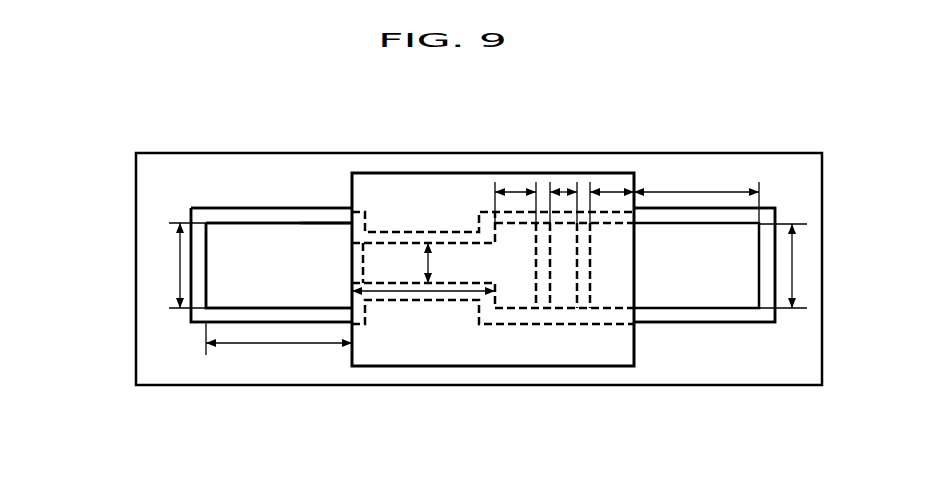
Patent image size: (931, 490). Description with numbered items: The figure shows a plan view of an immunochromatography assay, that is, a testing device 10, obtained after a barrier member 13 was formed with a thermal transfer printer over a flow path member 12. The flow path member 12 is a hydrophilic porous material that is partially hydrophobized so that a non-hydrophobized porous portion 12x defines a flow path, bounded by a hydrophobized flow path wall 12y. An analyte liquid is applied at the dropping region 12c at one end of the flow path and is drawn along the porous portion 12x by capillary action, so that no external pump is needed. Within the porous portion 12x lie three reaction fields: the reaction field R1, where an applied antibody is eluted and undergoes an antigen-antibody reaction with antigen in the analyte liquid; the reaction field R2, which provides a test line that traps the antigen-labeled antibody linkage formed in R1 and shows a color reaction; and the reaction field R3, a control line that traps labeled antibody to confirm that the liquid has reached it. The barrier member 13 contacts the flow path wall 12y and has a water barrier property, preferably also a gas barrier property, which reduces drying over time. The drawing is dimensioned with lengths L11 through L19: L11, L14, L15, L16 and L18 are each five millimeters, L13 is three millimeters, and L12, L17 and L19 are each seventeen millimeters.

The testing device 10 is at (786, 103).
The flow path member 12 is at (124, 172).
The porous portion 12x is at (228, 237).
The dropping region 12c is at (272, 256).
The flow path wall 12y is at (317, 220).
The barrier member 13 is at (442, 173).
The reaction field R1 is at (393, 292).
The reaction field R2 is at (540, 307).
The reaction field R3 is at (577, 312).
The length L11 is at (174, 265).
The length L12 is at (279, 347).
The length L13 is at (449, 263).
The length L14 is at (515, 190).
The length L15 is at (562, 190).
The length L16 is at (612, 190).
The length L17 is at (737, 190).
The length L18 is at (795, 266).
The length L19 is at (478, 293).